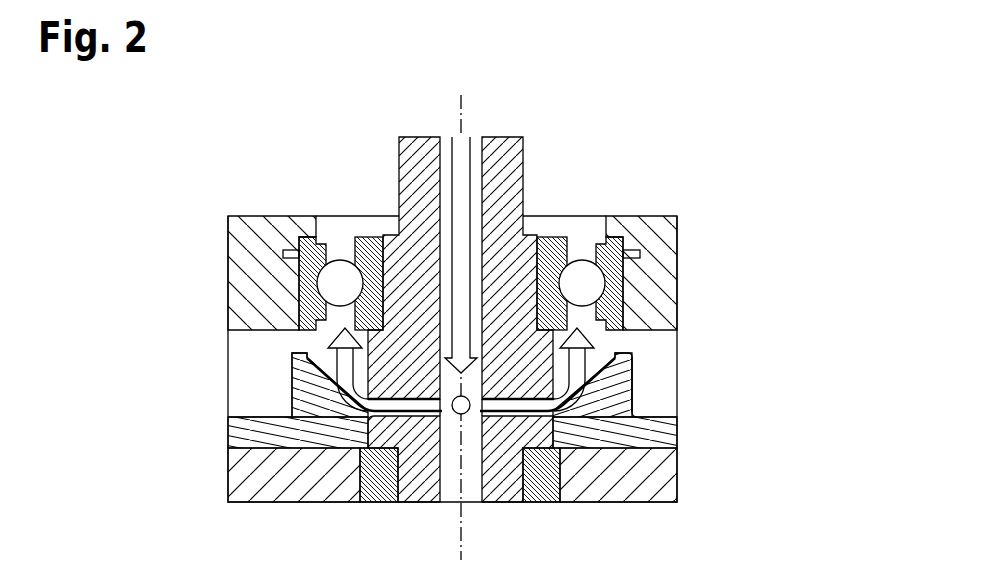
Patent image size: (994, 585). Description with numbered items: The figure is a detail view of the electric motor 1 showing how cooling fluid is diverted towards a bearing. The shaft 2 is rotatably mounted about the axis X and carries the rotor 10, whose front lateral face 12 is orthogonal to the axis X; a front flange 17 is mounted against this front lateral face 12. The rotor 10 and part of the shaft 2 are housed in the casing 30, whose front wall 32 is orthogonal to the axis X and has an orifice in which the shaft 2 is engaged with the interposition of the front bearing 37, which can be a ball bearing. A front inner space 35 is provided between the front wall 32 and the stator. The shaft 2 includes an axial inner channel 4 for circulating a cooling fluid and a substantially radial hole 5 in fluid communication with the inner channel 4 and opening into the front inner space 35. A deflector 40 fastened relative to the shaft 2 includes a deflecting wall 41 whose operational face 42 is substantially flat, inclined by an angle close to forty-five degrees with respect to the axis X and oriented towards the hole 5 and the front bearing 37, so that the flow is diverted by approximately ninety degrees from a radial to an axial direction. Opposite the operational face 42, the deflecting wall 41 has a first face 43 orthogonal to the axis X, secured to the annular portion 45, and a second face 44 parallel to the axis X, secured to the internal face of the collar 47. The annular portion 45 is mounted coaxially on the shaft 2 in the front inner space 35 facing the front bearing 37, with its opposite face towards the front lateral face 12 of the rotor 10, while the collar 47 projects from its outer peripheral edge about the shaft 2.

The motor 1 is at (716, 263).
The shaft 2 is at (500, 178).
The inner channel 4 is at (471, 487).
The hole 5 is at (424, 398).
The rotor 10 is at (291, 489).
The front lateral face 12 is at (245, 445).
The front flange 17 is at (268, 448).
The casing 30 is at (263, 253).
The front wall 32 is at (641, 273).
The front inner space 35 is at (270, 367).
The front bearing 37 is at (617, 311).
The deflector 40 is at (460, 451).
The deflecting wall 41 is at (590, 398).
The operational face 42 is at (323, 372).
The first face 43 is at (630, 402).
The second face 44 is at (633, 365).
The annular portion 45 is at (572, 435).
The collar 47 is at (292, 378).
The axis X is at (462, 115).